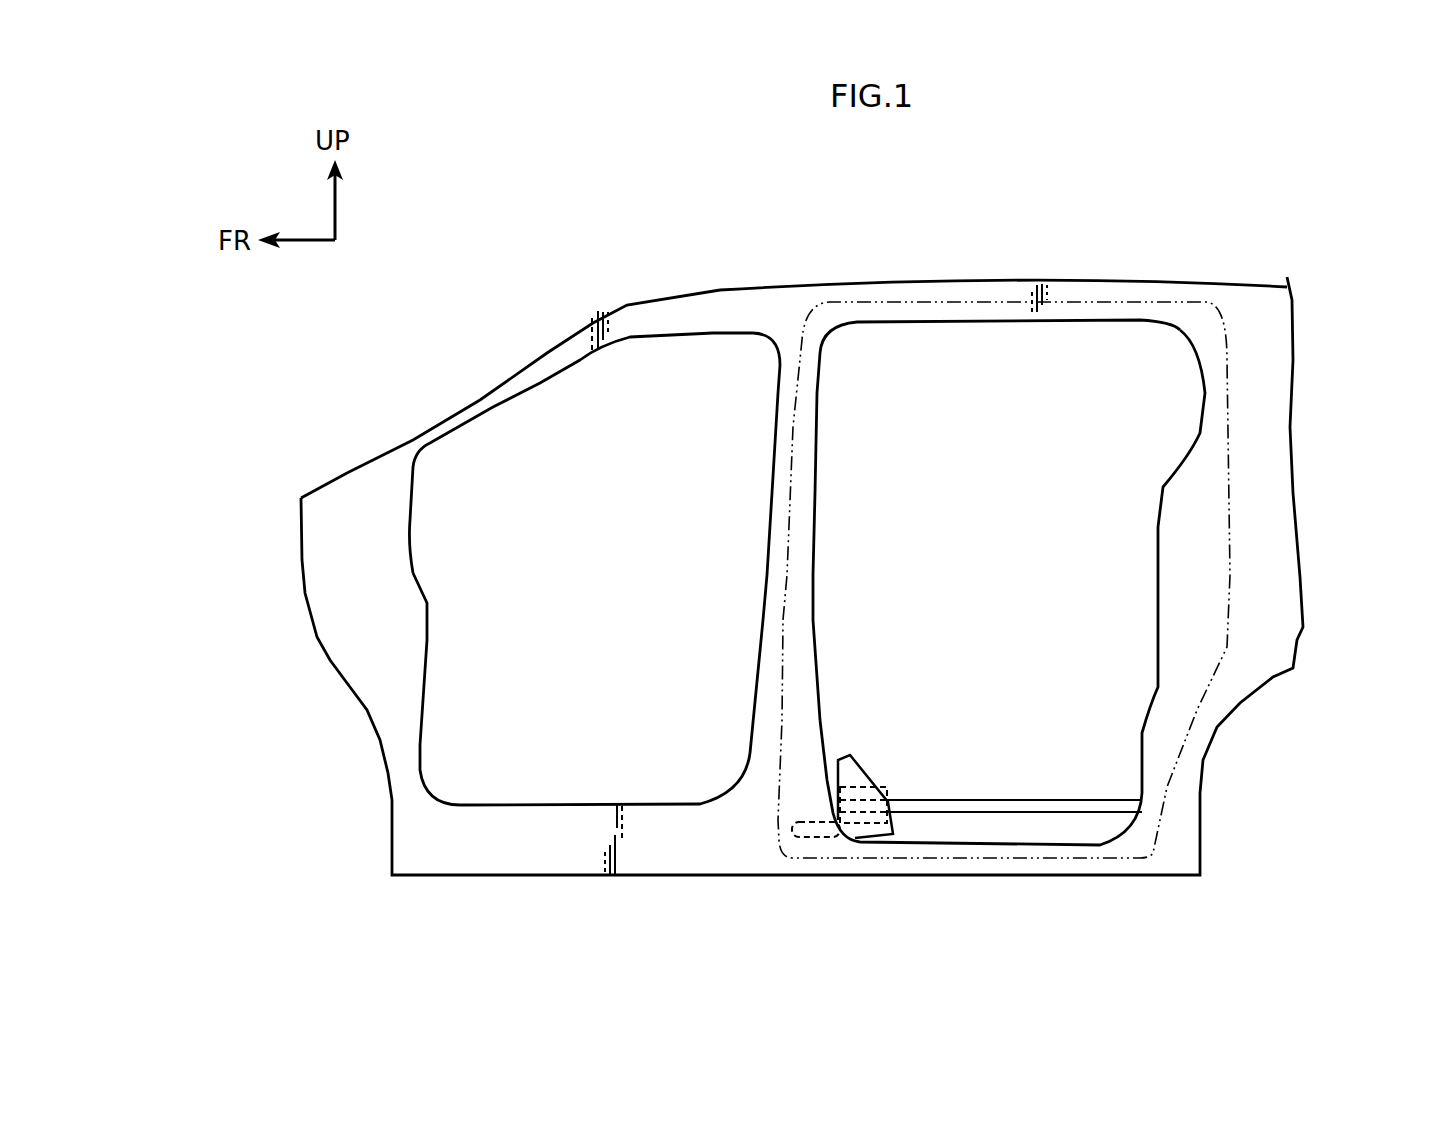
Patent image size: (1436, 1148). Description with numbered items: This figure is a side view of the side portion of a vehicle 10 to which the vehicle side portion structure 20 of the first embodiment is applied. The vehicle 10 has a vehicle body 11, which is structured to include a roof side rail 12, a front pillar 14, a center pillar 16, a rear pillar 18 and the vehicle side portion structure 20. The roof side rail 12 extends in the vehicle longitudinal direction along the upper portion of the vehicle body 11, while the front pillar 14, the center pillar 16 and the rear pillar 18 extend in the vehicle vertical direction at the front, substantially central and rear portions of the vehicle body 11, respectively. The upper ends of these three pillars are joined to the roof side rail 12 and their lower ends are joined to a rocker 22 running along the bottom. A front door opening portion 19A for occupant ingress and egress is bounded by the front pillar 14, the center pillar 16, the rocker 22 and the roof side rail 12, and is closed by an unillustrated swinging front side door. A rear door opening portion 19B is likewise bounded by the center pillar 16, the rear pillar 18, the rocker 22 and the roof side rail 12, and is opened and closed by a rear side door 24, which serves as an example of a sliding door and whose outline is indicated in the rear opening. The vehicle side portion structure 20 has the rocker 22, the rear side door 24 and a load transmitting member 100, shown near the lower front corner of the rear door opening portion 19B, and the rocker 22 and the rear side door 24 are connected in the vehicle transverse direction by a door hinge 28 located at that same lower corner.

The vehicle 10 is at (1168, 216).
The vehicle body 11 is at (763, 285).
The roof side rail 12 is at (985, 290).
The front pillar 14 is at (490, 410).
The center pillar 16 is at (818, 463).
The rear pillar 18 is at (1198, 380).
The front door opening portion 19A is at (419, 745).
The rear door opening portion 19B is at (820, 700).
The vehicle side portion structure 20 is at (771, 774).
The rocker 22 is at (1022, 797).
The rear side door 24 is at (1232, 453).
The door hinge 28 is at (865, 770).
The load transmitting member 100 is at (888, 786).